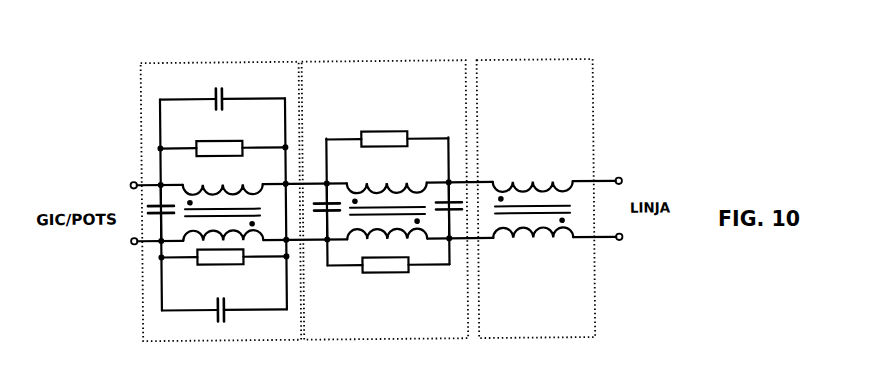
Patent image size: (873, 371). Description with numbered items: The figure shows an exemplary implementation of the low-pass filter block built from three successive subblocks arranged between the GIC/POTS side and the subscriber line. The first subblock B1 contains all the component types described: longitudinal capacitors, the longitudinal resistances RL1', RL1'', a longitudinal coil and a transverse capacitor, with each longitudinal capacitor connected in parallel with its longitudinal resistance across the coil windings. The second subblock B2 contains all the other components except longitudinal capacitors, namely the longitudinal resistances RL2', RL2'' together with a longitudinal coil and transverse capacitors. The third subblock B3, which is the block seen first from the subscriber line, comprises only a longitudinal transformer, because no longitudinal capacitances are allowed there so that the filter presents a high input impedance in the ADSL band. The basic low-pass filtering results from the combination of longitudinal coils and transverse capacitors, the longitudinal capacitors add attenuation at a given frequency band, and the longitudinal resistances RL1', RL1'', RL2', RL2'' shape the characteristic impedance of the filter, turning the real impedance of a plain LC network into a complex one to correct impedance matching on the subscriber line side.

The first subblock B1 is at (163, 63).
The second subblock B2 is at (336, 62).
The third subblock B3 is at (521, 62).
The longitudinal resistance RL1' is at (222, 140).
The longitudinal resistance RL1'' is at (223, 271).
The longitudinal resistance RL2' is at (387, 129).
The longitudinal resistance RL2'' is at (388, 277).